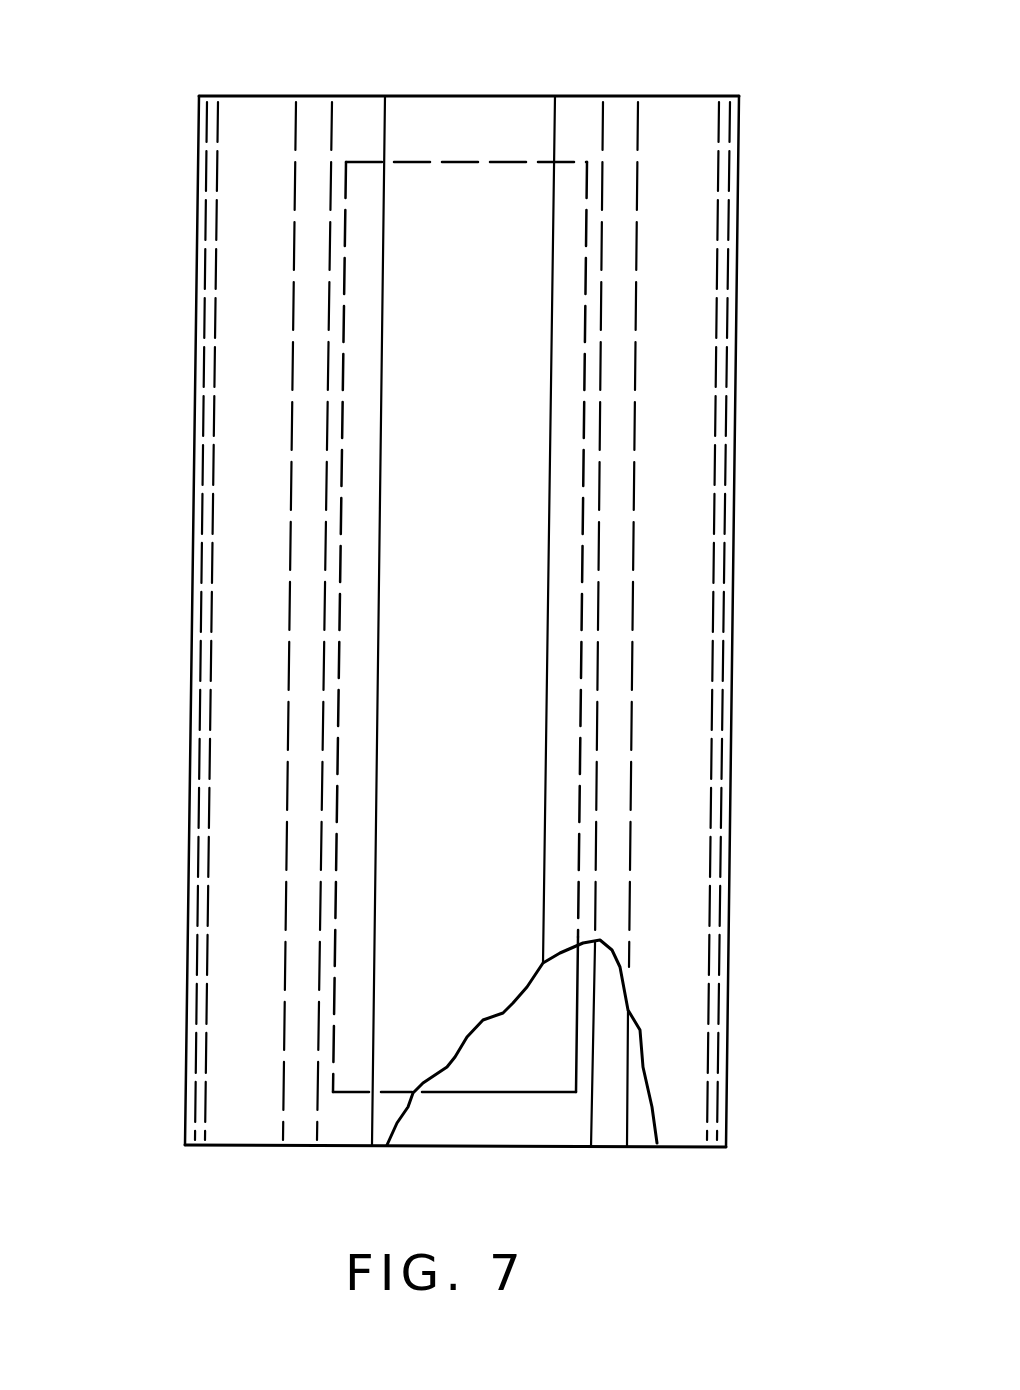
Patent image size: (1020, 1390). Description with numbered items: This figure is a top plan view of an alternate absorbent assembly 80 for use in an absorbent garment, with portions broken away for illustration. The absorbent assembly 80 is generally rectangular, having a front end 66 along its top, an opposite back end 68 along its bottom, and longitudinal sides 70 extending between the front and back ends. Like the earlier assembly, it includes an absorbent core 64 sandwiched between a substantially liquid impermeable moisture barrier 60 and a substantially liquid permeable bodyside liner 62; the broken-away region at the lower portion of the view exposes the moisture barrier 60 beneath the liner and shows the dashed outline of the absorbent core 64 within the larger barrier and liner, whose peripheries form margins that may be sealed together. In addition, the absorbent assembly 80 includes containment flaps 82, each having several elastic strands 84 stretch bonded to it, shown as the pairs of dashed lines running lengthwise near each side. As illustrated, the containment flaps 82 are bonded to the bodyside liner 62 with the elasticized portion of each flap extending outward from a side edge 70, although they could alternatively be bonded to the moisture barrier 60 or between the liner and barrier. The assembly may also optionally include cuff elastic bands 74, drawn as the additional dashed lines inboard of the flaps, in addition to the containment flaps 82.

The moisture barrier 60 is at (561, 1122).
The bodyside liner 62 is at (493, 289).
The absorbent core 64 is at (490, 1065).
The front end 66 is at (503, 86).
The back end 68 is at (350, 1160).
The longitudinal side 70 is at (630, 1090).
The cuff elastic bands 74 is at (295, 1080).
The absorbent assembly 80 is at (265, 86).
The containment flaps 82 is at (247, 407).
The elastic strands 84 is at (207, 615).